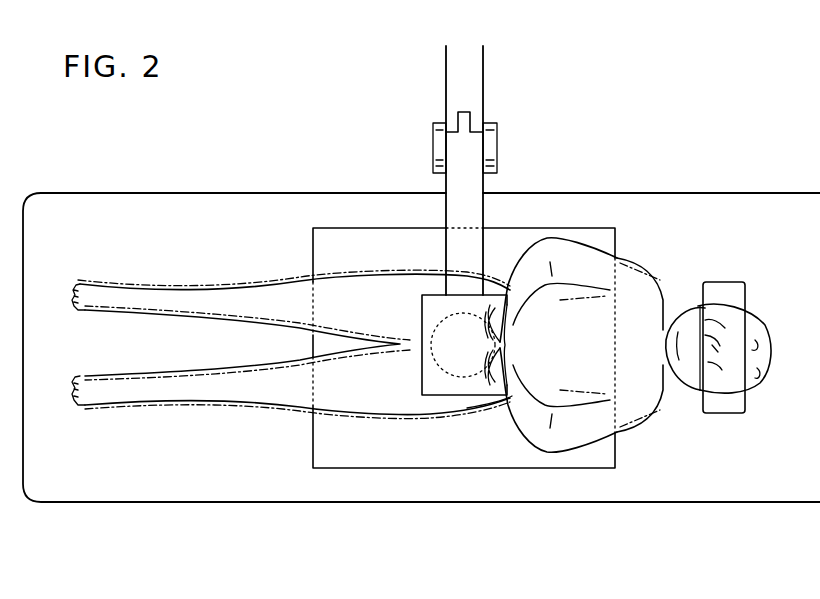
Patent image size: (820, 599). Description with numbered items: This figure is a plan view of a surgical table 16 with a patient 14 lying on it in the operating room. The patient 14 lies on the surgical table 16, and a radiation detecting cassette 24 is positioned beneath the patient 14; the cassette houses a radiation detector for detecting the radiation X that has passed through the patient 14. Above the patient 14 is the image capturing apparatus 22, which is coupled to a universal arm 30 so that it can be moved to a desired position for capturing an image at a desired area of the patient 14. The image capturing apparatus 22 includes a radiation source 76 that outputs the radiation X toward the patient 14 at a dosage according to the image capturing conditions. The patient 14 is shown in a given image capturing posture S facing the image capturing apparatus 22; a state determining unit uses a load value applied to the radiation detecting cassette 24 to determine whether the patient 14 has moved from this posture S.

The patient 14 is at (240, 279).
The surgical table 16 is at (745, 206).
The image capturing apparatus 22 is at (415, 408).
The radiation detecting cassette 24 is at (326, 450).
The universal arm 30 is at (471, 84).
The radiation source 76 is at (422, 308).
The image capturing posture S is at (458, 410).